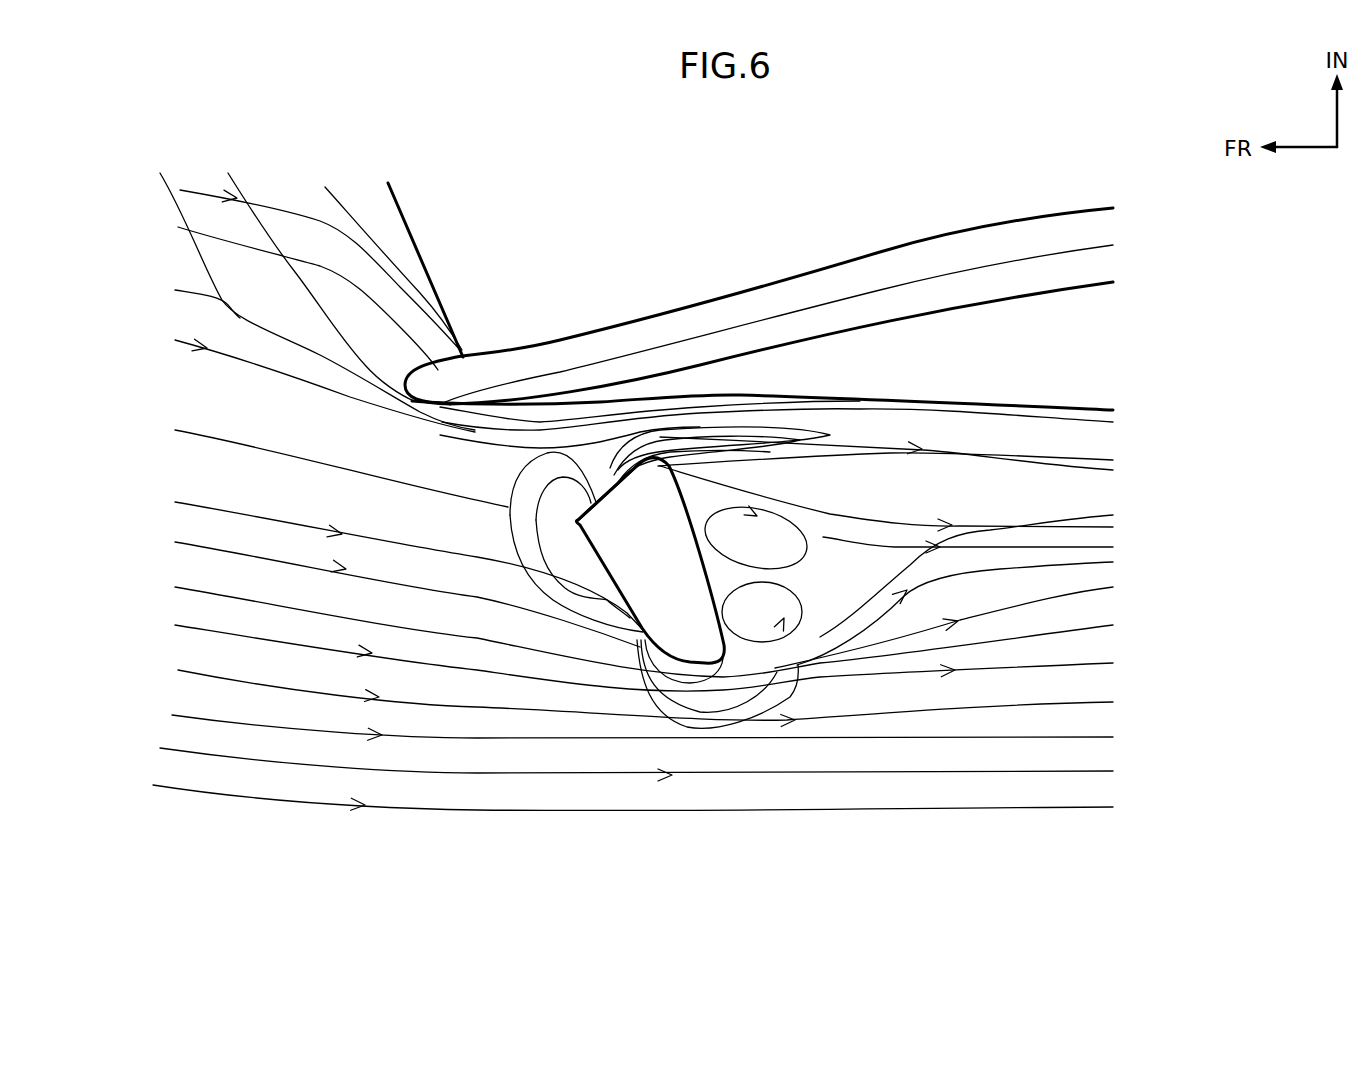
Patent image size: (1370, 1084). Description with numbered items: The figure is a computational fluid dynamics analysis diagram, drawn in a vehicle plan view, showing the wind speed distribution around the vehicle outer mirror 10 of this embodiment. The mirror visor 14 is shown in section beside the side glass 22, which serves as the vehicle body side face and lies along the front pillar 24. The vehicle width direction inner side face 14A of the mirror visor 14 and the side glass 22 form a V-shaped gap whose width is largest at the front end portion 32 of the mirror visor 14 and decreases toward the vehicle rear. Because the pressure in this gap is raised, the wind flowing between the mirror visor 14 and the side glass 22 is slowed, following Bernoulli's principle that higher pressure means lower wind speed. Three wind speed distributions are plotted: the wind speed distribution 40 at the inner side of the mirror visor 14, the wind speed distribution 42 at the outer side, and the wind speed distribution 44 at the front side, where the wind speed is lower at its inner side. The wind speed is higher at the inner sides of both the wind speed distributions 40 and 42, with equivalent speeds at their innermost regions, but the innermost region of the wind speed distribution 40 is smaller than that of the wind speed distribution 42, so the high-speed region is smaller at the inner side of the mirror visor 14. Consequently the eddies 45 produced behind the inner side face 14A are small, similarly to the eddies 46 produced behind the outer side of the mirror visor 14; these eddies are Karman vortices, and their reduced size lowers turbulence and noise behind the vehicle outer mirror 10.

The vehicle outer mirror 10 is at (633, 565).
The mirror visor 14 is at (605, 568).
The inner side face 14A is at (597, 480).
The side glass 22 is at (1007, 404).
The front pillar 24 is at (759, 285).
The front end portion 32 is at (535, 518).
The wind speed distribution 40 is at (712, 431).
The wind speed distribution 42 is at (638, 640).
The wind speed distribution 44 is at (513, 481).
The eddies 45 is at (756, 537).
The eddies 46 is at (762, 612).